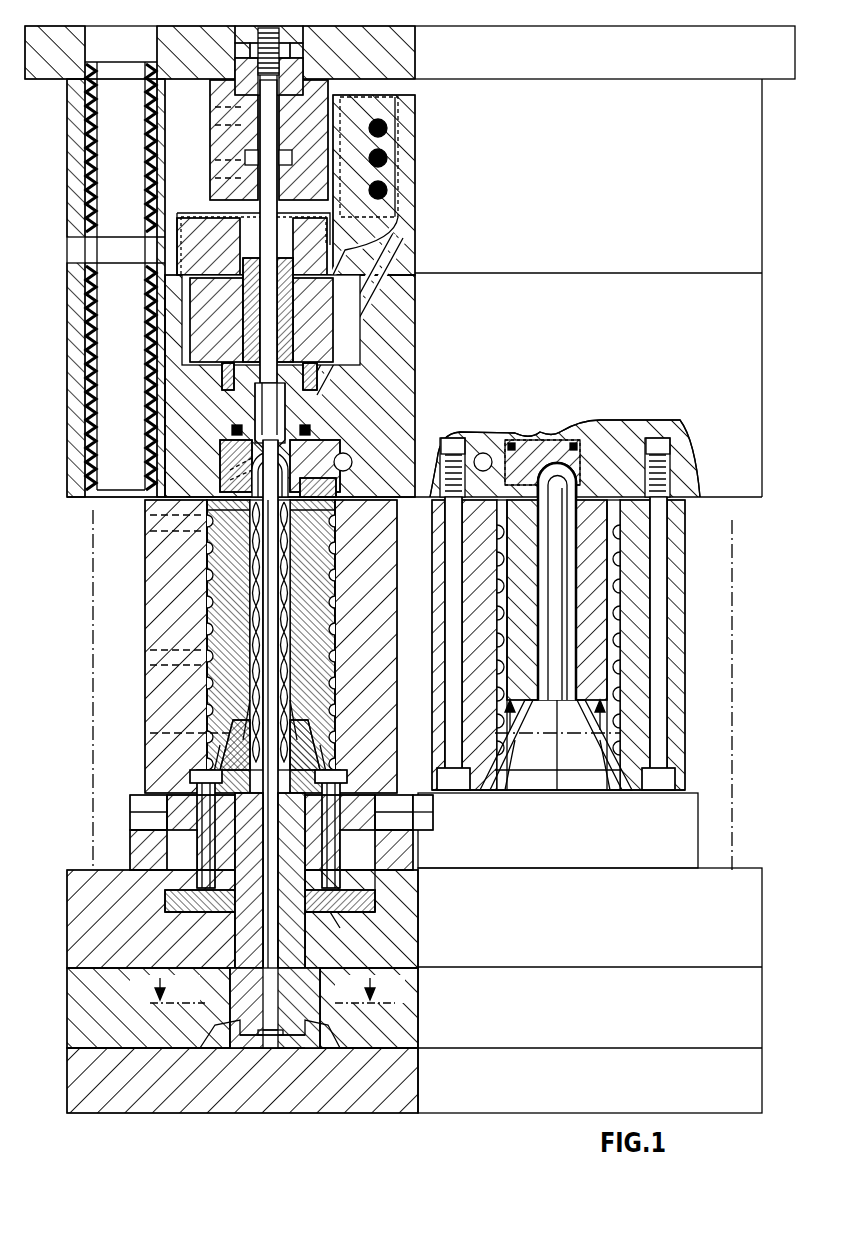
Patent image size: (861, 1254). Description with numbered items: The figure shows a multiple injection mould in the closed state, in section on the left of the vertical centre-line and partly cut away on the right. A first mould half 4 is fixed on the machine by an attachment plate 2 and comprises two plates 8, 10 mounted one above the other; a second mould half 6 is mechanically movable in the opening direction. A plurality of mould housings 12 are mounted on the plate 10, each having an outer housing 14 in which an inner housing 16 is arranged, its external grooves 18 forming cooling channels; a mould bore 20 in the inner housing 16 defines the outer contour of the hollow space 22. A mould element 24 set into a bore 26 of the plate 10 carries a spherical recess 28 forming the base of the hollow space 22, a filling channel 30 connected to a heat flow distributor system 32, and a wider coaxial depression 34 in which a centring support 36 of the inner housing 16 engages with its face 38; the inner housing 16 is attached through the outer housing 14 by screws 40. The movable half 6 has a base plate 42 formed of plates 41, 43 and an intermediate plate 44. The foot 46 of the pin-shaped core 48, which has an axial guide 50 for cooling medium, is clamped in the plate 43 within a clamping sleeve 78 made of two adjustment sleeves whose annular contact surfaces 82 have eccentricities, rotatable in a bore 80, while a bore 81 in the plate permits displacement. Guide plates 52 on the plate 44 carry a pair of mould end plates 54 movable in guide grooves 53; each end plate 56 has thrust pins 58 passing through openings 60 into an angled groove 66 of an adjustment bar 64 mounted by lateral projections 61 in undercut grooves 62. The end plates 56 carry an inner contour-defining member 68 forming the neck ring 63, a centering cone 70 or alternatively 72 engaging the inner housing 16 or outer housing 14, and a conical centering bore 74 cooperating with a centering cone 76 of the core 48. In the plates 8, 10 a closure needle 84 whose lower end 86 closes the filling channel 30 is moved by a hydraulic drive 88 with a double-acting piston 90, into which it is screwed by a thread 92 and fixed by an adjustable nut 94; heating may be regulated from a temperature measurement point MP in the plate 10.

The attachment plate 2 is at (62, 62).
The first mould half 4 is at (66, 402).
The second mould half 6 is at (66, 958).
The plate 8 is at (78, 135).
The plate 10 is at (79, 308).
The mould housing 12 is at (143, 654).
The outer housing 14 is at (178, 610).
The inner housing 16 is at (213, 540).
The grooves 18 is at (205, 580).
The mould bore 20 is at (300, 545).
The hollow space 22 is at (292, 567).
The mould element 24 is at (300, 445).
The bore 26 is at (338, 452).
The recess 28 is at (352, 465).
The filling channel 30 is at (312, 392).
The heat flow distributor system 32 is at (338, 330).
The depression 34 is at (336, 485).
The centring support 36 is at (232, 480).
The face 38 is at (222, 462).
The screws 40 is at (448, 555).
The plate 41 is at (85, 1065).
The base plate 42 is at (145, 1118).
The plate 43 is at (90, 1010).
The intermediate plate 44 is at (95, 985).
The foot 46 is at (250, 990).
The core 48 is at (284, 607).
The axial guide 50 is at (272, 630).
The guide plate 52 is at (142, 855).
The guide grooves 53 is at (160, 820).
The pair of mould end plates 54 is at (230, 745).
The mould end plate 56 is at (232, 745).
The thrust pins 58 is at (200, 878).
The openings 60 is at (178, 848).
The lateral projections 61 is at (380, 900).
The undercut grooves 62 is at (165, 887).
The neck ring 63 is at (320, 672).
The adjustment bars 64 is at (160, 912).
The groove 66 is at (225, 895).
The inner contour-defining member 68 is at (308, 690).
The centering cone 70 is at (322, 750).
The centering cone 72 is at (195, 790).
The conical centering bore 74 is at (340, 780).
The centering cone 76 is at (405, 812).
The sleeve 78 is at (330, 1048).
The bore 80 is at (345, 1015).
The bore 81 is at (308, 920).
The annular contact surfaces 82 is at (320, 1052).
The closure needle 84 is at (262, 320).
The lower end 86 is at (255, 440).
The hydraulic drive 88 is at (228, 186).
The piston 90 is at (250, 132).
The thread 92 is at (295, 62).
The adjustable nut 94 is at (289, 45).
The temperature measurement point MP is at (413, 397).